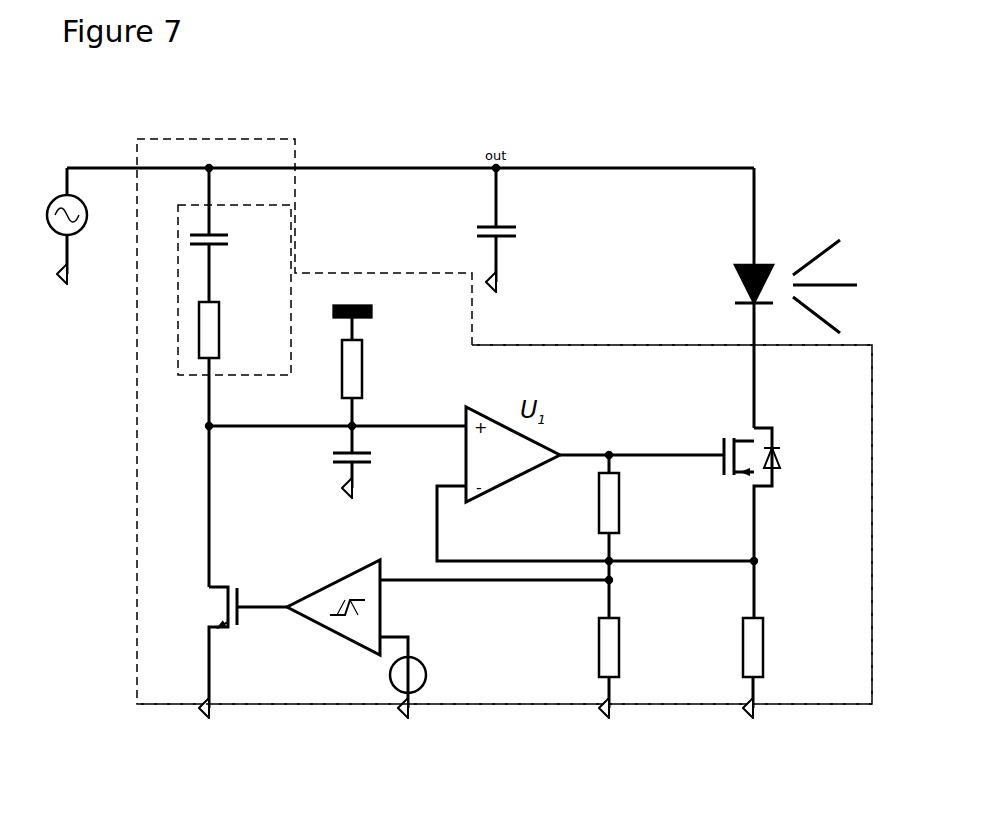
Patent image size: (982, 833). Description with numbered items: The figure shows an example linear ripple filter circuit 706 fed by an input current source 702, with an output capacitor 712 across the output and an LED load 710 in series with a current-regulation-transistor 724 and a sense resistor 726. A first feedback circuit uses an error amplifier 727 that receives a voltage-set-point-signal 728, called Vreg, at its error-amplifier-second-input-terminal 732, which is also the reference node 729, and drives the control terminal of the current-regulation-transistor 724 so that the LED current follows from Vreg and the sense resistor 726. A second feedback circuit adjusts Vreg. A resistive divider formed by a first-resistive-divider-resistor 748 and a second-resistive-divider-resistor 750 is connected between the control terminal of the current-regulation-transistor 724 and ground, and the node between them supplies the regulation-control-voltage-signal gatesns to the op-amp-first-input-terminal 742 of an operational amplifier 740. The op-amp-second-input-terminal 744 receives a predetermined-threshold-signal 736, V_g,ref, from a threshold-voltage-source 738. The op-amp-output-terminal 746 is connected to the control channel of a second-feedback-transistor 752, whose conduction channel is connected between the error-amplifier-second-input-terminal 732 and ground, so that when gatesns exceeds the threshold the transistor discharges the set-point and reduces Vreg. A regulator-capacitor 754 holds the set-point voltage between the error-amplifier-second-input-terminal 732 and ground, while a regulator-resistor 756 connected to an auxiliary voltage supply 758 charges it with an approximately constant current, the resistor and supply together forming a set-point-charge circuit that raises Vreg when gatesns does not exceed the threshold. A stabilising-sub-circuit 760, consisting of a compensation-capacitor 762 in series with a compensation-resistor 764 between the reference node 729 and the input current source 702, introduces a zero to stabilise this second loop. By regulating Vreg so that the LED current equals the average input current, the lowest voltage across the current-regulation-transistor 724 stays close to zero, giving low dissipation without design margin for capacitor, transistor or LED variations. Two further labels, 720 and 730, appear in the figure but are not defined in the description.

The input current source 702 is at (47, 228).
The linear ripple filter circuit 706 is at (133, 493).
The LED load 710 is at (757, 267).
The output capacitor 712 is at (498, 227).
The sense node 720 is at (745, 352).
The current-regulation-transistor 724 is at (717, 437).
The sense resistor 726 is at (740, 630).
The error amplifier 727 is at (537, 442).
The voltage-set-point-signal 728 is at (222, 450).
The reference node 729 is at (207, 425).
The inverting input of amplifier U1 730 is at (457, 490).
The error-amplifier-second-input-terminal 732 is at (458, 435).
The predetermined-threshold-signal 736 is at (467, 706).
The threshold-voltage-source 738 is at (395, 687).
The operational amplifier 740 is at (330, 632).
The op-amp-first-input-terminal 742 is at (388, 570).
The op-amp-second-input-terminal 744 is at (385, 628).
The op-amp-output-terminal 746 is at (282, 615).
The first-resistive-divider-resistor 748 is at (597, 512).
The second-resistive-divider-resistor 750 is at (615, 645).
The second-feedback-transistor 752 is at (217, 603).
The regulator-capacitor 754 is at (340, 467).
The regulator-resistor 756 is at (365, 375).
The auxiliary voltage supply 758 is at (353, 303).
The stabilising-sub-circuit 760 is at (192, 234).
The compensation-capacitor 762 is at (200, 235).
The compensation-resistor 764 is at (197, 320).